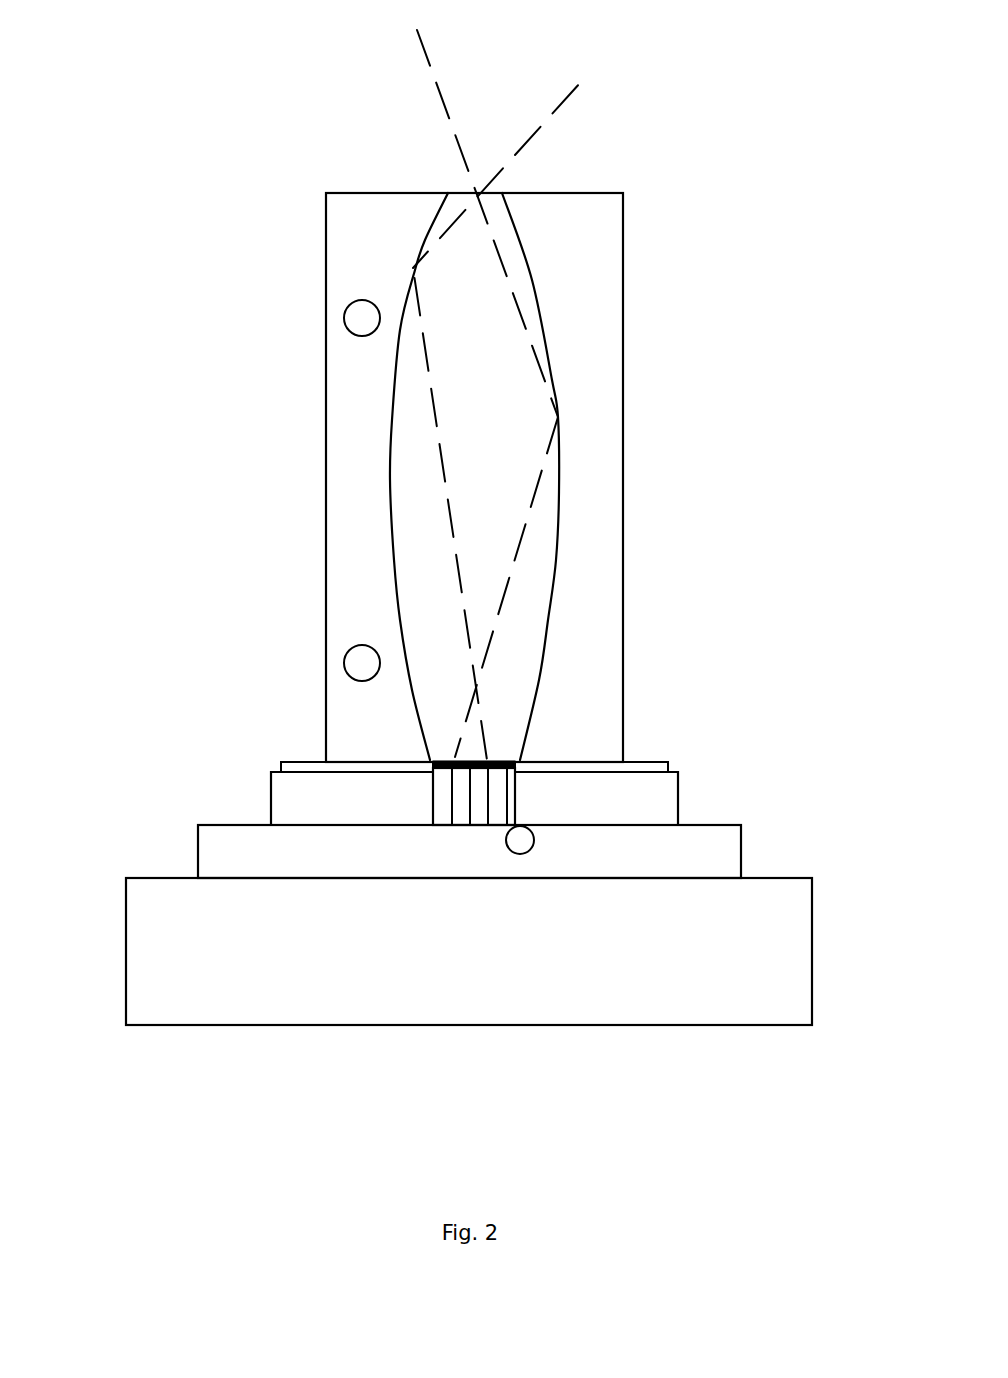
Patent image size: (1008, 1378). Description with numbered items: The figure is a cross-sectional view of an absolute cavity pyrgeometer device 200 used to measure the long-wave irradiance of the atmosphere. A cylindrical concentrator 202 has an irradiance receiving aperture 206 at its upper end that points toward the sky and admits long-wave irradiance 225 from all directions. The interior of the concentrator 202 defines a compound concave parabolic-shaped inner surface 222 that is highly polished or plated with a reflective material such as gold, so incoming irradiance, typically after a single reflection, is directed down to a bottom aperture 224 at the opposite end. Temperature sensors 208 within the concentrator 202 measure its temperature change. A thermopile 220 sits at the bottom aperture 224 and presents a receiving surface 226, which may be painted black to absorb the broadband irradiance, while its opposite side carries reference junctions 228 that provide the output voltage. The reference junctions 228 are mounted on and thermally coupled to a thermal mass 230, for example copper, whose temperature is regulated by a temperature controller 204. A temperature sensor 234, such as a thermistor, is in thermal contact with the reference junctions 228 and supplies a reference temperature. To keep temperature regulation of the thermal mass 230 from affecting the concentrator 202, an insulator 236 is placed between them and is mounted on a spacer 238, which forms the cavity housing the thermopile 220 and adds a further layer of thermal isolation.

The pyrgeometer device 200 is at (288, 94).
The concentrator 202 is at (625, 368).
The temperature controller 204 is at (160, 935).
The irradiance receiving aperture 206 is at (457, 195).
The temperature sensors 208 is at (362, 318).
The thermopile 220 is at (508, 788).
The inner surface 222 is at (560, 492).
The bottom aperture 224 is at (443, 743).
The long-wave irradiance 225 is at (443, 103).
The receiving surface 226 is at (473, 762).
The reference junctions 228 is at (463, 826).
The thermal mass 230 is at (207, 857).
The temperature sensor 234 is at (520, 840).
The insulator 236 is at (308, 763).
The spacer 238 is at (280, 805).